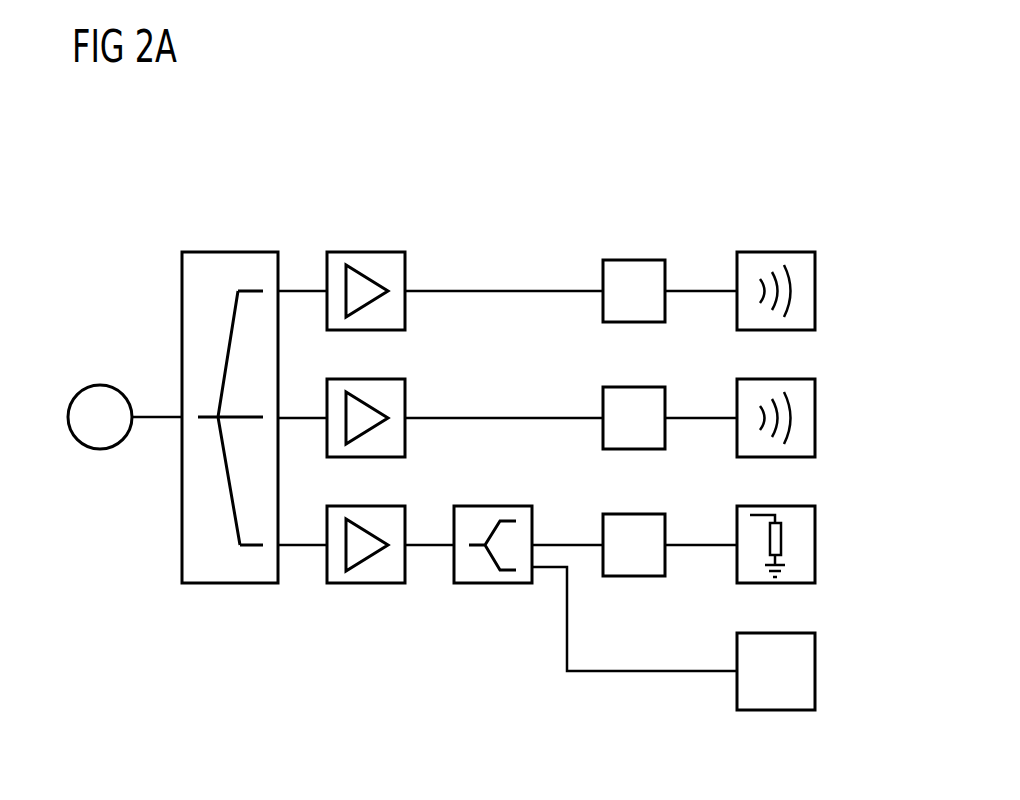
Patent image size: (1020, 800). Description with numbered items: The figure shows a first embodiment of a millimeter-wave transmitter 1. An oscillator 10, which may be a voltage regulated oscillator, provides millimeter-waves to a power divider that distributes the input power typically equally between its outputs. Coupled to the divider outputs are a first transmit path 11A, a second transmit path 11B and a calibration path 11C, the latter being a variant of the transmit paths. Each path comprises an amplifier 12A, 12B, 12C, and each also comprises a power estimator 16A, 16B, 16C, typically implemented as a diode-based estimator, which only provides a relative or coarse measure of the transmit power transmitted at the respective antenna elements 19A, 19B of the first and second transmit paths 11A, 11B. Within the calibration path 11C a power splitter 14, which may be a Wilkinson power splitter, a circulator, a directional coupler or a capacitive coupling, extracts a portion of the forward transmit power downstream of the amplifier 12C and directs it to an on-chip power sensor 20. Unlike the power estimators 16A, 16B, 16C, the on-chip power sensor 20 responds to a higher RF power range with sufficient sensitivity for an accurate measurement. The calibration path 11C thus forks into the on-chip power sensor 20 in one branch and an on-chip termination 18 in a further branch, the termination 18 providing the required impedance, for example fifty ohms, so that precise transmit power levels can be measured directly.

The millimeter-wave transmitter 1 is at (206, 163).
The oscillator 10 is at (100, 385).
The first transmit path 11A is at (814, 190).
The second transmit path 11B is at (814, 365).
The calibration path 11C is at (814, 717).
The amplifier 12A is at (367, 252).
The amplifier 12B is at (405, 397).
The amplifier 12C is at (367, 583).
The power splitter 14 is at (502, 506).
The power estimator 16A is at (634, 260).
The power estimator 16B is at (603, 400).
The power estimator 16C is at (634, 514).
The on-chip termination 18 is at (813, 545).
The antenna element 19A is at (775, 252).
The antenna element 19B is at (813, 440).
The on-chip power sensor 20 is at (813, 672).